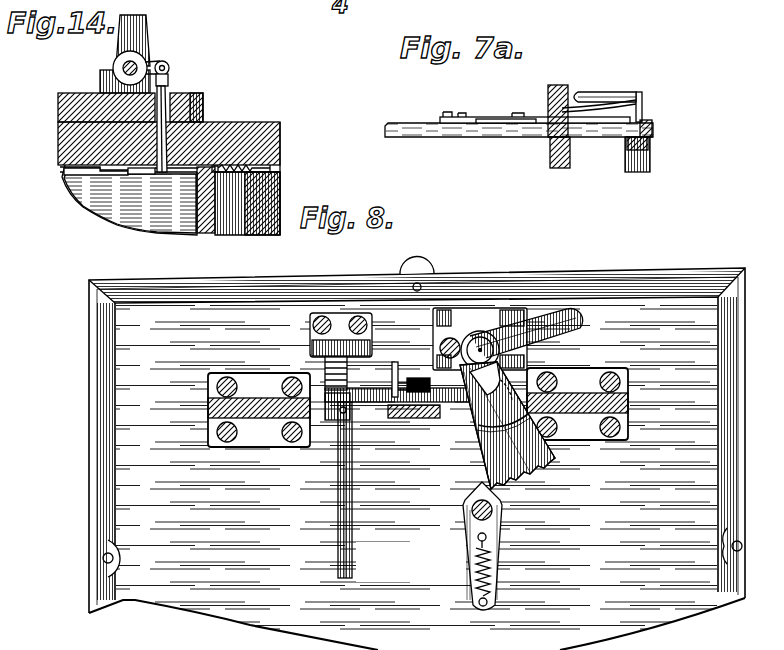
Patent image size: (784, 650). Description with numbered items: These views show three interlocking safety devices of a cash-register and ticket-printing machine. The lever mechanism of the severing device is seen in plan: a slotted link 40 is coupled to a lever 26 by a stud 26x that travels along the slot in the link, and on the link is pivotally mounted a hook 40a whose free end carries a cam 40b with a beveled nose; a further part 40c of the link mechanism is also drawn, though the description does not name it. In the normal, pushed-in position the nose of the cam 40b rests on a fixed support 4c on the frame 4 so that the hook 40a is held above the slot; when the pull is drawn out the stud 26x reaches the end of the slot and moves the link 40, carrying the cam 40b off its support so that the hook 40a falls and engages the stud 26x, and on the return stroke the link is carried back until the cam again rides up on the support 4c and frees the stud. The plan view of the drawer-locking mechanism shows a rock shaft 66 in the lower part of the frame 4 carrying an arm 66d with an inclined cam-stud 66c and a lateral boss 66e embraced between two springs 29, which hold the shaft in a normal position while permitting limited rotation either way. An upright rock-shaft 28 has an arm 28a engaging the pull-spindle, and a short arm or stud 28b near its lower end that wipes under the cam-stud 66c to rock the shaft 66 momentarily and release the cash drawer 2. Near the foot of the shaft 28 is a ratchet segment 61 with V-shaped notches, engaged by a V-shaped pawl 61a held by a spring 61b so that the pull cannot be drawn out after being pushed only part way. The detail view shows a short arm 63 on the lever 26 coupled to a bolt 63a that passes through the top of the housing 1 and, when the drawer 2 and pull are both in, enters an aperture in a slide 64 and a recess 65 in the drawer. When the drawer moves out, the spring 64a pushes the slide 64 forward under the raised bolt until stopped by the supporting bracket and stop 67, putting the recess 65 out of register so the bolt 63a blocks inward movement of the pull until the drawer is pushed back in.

In FIG. 14, the housing 1 is at (169, 163).
In FIG. 14, the cash drawer 2 is at (160, 187).
In FIG. 14, the frame 4 is at (122, 97).
In FIG. 8, the frame 4 is at (417, 453).
In FIG. 7A, the fixed support 4c is at (615, 92).
In FIG. 14, the lever 26 is at (148, 26).
In FIG. 7A, the lever 26 is at (648, 145).
In FIG. 7A, the stud 26x is at (651, 121).
In FIG. 8, the upright rock-shaft 28 is at (480, 348).
In FIG. 8, the arm 28a is at (526, 333).
In FIG. 8, the short arm or stud 28b is at (528, 368).
In FIG. 8, the springs 29 is at (347, 375).
In FIG. 7A, the link 40 is at (482, 137).
In FIG. 7A, the hook 40a is at (546, 121).
In FIG. 7A, the cam 40b is at (628, 102).
In FIG. 7A, the slide strip 40c is at (478, 120).
In FIG. 8, the ratchet segment 61 is at (507, 425).
In FIG. 8, the V-shaped pawl 61a is at (471, 499).
In FIG. 8, the spring 61b is at (506, 546).
In FIG. 14, the short arm 63 is at (166, 64).
In FIG. 14, the bolt 63a is at (170, 92).
In FIG. 14, the slide 64 is at (190, 172).
In FIG. 14, the spring 64a is at (241, 192).
In FIG. 14, the recess or hole 65 is at (160, 174).
In FIG. 8, the rock shaft 66 is at (340, 502).
In FIG. 8, the cam-stud 66c is at (491, 398).
In FIG. 8, the arm 66d is at (460, 403).
In FIG. 8, the lateral boss 66e is at (417, 378).
In FIG. 14, the supporting bracket and stop 67 is at (106, 170).